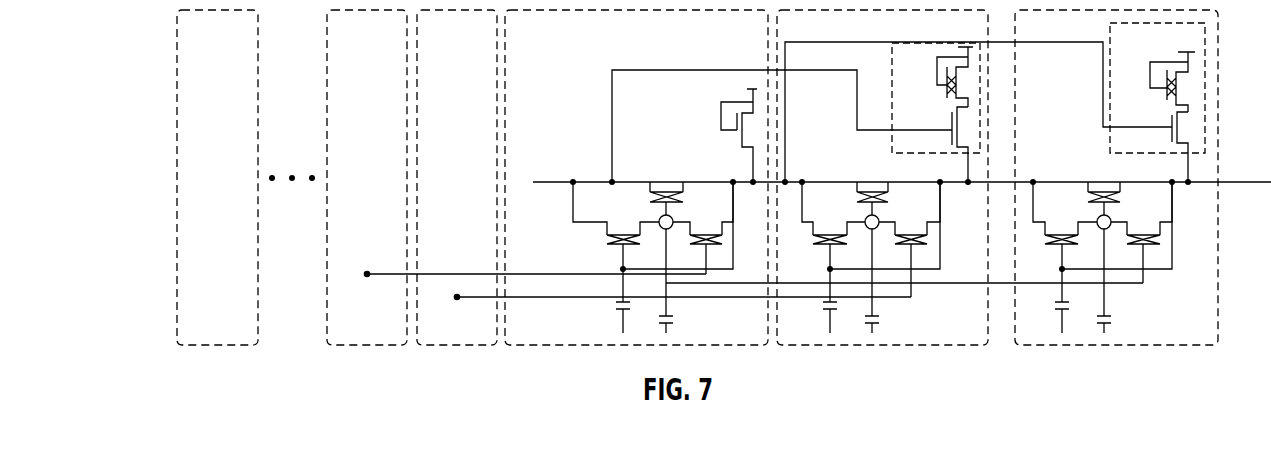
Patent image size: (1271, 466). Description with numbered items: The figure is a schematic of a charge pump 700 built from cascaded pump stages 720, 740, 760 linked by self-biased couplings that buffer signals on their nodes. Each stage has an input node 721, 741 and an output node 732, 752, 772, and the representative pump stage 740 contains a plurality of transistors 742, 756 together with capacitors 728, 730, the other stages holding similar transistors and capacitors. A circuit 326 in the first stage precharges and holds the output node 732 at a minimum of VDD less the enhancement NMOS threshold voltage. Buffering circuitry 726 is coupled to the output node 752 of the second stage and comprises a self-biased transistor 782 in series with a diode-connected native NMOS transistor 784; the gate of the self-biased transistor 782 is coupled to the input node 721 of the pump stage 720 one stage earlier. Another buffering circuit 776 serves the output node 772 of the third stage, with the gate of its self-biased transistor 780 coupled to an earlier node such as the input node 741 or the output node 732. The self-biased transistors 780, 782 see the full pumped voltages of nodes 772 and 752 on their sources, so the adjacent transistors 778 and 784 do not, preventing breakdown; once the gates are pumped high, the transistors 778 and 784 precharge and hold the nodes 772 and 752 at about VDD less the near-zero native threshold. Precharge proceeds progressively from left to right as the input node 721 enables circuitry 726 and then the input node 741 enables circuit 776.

The charge pump 700 is at (152, 8).
The pump stage 720 is at (557, 37).
The pump stage 740 is at (826, 37).
The pump stage 760 is at (1064, 36).
The input node 721 is at (572, 170).
The output node 732 is at (727, 170).
The input node 741 is at (802, 170).
The output node 752 is at (935, 170).
The output node 772 is at (1166, 170).
The circuit 326 is at (710, 114).
The buffering circuitry 726 is at (884, 73).
The buffering circuit 776 is at (1102, 28).
The capacitor 728 is at (618, 303).
The capacitor 730 is at (673, 318).
The transistor 742 is at (825, 232).
The transistor 756 is at (908, 232).
The self-biased transistor 782 is at (950, 125).
The NMOS/native NMOS transistor 784 is at (935, 65).
The transistor 778 is at (1148, 77).
The self-biased transistor 780 is at (1163, 133).